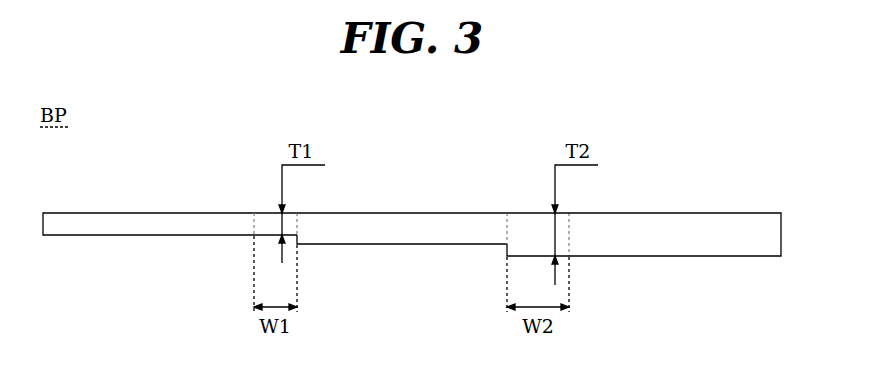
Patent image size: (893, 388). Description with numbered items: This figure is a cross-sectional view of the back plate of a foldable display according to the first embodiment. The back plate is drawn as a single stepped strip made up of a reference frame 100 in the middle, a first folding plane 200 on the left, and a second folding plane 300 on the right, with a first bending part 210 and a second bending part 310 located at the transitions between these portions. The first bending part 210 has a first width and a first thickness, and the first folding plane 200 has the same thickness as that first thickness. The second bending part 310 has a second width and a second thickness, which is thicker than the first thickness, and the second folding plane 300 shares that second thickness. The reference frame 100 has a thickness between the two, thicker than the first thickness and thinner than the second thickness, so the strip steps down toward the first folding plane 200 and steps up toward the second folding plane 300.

The reference frame 100 is at (397, 242).
The first folding plane 200 is at (160, 220).
The first bending part 210 is at (265, 223).
The second folding plane 300 is at (682, 240).
The second bending part 310 is at (525, 227).